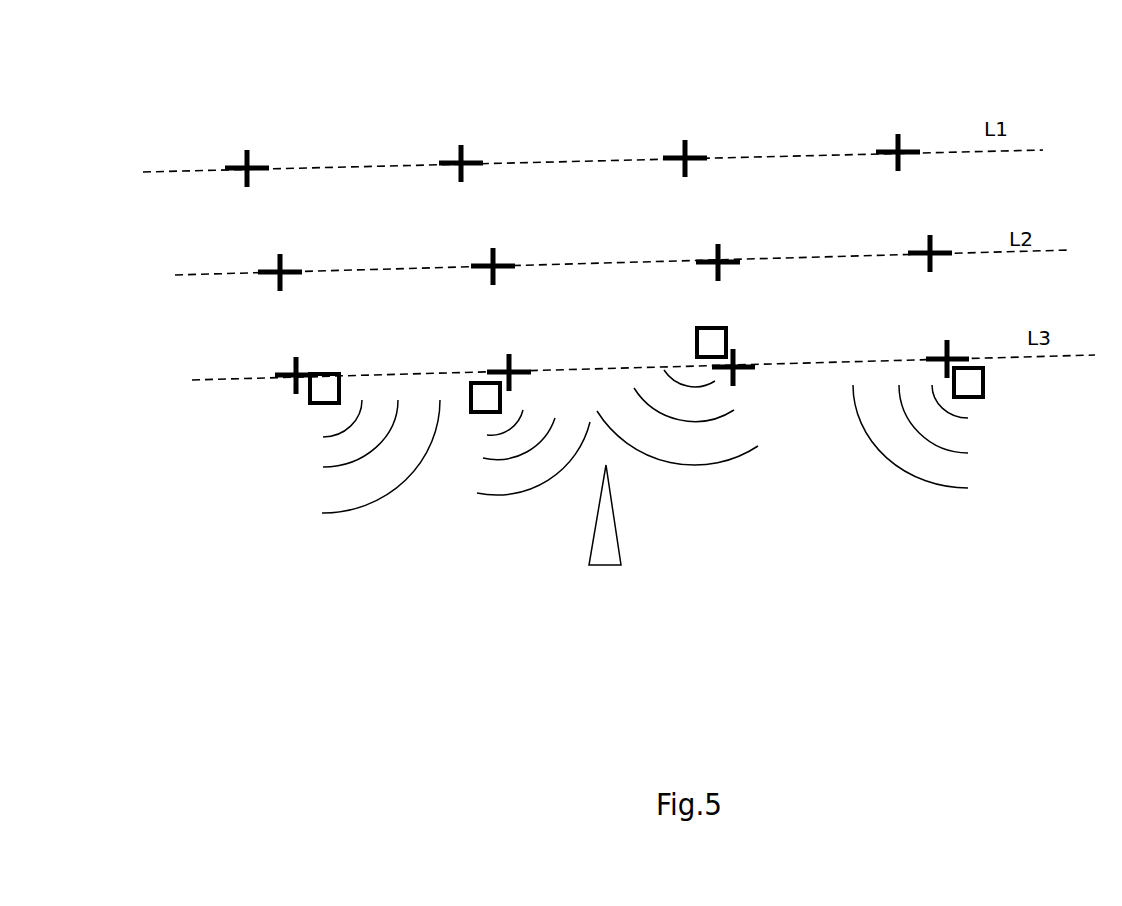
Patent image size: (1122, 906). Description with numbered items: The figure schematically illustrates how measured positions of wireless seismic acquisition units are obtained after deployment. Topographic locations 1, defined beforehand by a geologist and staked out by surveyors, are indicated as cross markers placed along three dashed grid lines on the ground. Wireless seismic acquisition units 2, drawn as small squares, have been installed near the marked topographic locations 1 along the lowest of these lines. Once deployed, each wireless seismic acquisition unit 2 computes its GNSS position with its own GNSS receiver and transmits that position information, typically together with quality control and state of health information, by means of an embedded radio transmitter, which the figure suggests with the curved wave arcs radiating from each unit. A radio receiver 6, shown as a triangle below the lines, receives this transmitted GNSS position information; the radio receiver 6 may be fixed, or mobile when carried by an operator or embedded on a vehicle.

The topographic location 1 is at (233, 153).
The wireless seismic acquisition unit 2 is at (975, 405).
The radio receiver 6 is at (631, 537).